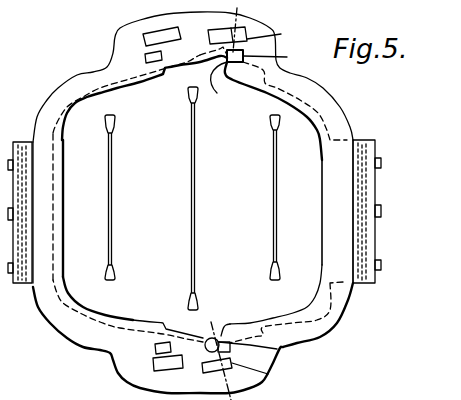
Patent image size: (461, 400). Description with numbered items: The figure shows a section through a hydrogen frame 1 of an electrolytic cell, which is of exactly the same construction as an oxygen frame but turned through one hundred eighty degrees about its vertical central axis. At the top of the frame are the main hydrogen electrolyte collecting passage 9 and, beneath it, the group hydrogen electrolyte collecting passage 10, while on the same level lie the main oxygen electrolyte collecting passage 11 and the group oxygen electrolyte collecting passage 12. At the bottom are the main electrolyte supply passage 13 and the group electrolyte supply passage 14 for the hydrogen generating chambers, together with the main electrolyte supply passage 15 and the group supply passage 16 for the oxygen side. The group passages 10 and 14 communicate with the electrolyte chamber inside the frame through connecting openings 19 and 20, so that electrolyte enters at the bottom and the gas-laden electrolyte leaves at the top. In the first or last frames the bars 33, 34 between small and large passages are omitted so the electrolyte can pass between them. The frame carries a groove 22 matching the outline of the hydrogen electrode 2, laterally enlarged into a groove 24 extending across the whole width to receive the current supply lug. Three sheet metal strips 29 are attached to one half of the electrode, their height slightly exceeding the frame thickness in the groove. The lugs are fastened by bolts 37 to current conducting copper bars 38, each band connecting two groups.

The housing 1 is at (55, 93).
The hydrogen electrode 2 is at (227, 204).
The main hydrogen electrolyte collecting passage 9 is at (270, 35).
The group hydrogen electrolyte collecting passage 10 is at (269, 56).
The main oxygen electrolyte collecting passage 11 is at (143, 35).
The group oxygen electrolyte collecting passage 12 is at (146, 58).
The main electrolyte supply passage 13 is at (268, 374).
The group electrolyte supply passage 14 is at (278, 349).
The main electrolyte supply passage 15 is at (160, 365).
The group supply passage 16 is at (155, 347).
The connecting opening 19 is at (223, 87).
The connecting opening 20 is at (230, 327).
The groove 22 is at (93, 93).
The groove 24 is at (337, 262).
The sheet metal strips 29 is at (113, 236).
The bar 33 is at (205, 44).
The bar 34 is at (207, 339).
The bolts 37 is at (383, 181).
The copper bars 38 is at (372, 153).